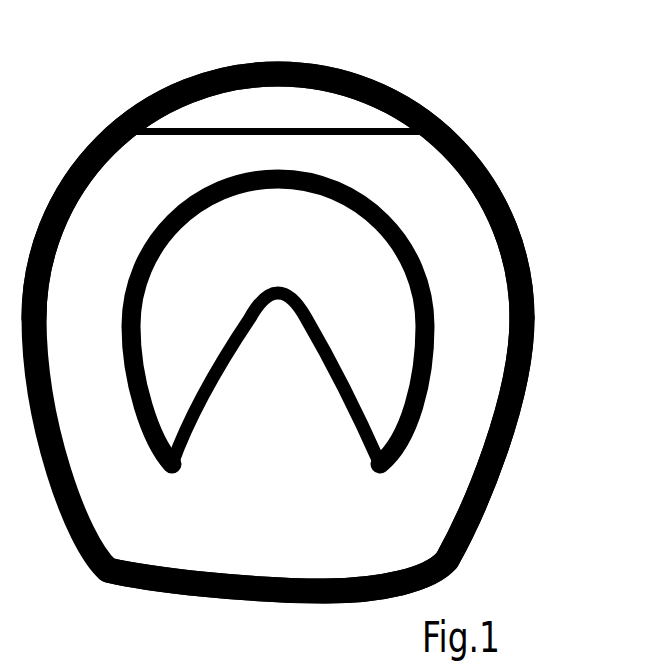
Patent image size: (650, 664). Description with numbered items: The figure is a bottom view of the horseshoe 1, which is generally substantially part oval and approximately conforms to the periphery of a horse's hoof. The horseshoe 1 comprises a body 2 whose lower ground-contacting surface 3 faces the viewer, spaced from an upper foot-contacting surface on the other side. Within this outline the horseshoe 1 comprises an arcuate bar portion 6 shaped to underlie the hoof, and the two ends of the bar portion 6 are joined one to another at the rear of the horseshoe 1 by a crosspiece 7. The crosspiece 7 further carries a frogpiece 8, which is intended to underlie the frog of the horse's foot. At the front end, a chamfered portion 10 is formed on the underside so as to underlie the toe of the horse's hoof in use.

The horseshoe 1 is at (462, 113).
The body 2 is at (450, 322).
The lower ground-contacting surface 3 is at (422, 487).
The arcuate bar portion 6 is at (123, 173).
The crosspiece 7 is at (298, 545).
The frogpiece 8 is at (302, 352).
The chamfered portion 10 is at (283, 100).